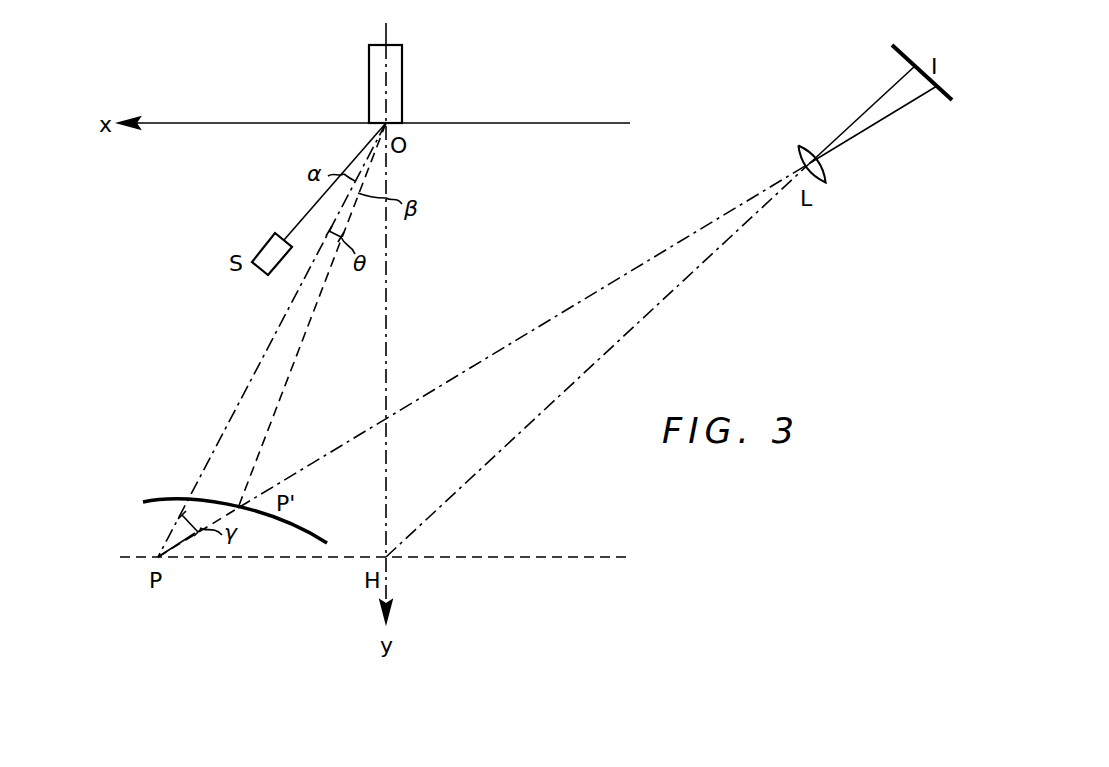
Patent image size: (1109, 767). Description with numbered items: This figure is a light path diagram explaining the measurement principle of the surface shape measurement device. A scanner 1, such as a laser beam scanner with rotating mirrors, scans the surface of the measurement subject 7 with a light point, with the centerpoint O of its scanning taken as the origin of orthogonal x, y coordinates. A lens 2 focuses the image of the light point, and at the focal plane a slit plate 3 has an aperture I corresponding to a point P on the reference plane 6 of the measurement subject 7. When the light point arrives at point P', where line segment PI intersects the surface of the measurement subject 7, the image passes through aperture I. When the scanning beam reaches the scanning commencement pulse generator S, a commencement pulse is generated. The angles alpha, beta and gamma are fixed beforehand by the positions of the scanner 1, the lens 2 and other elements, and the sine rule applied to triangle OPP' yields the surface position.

The scanner 1 is at (402, 78).
The lens 2 is at (800, 158).
The slit plate 3 is at (898, 60).
The reference plane 6 is at (135, 562).
The measurement subject 7 is at (165, 498).